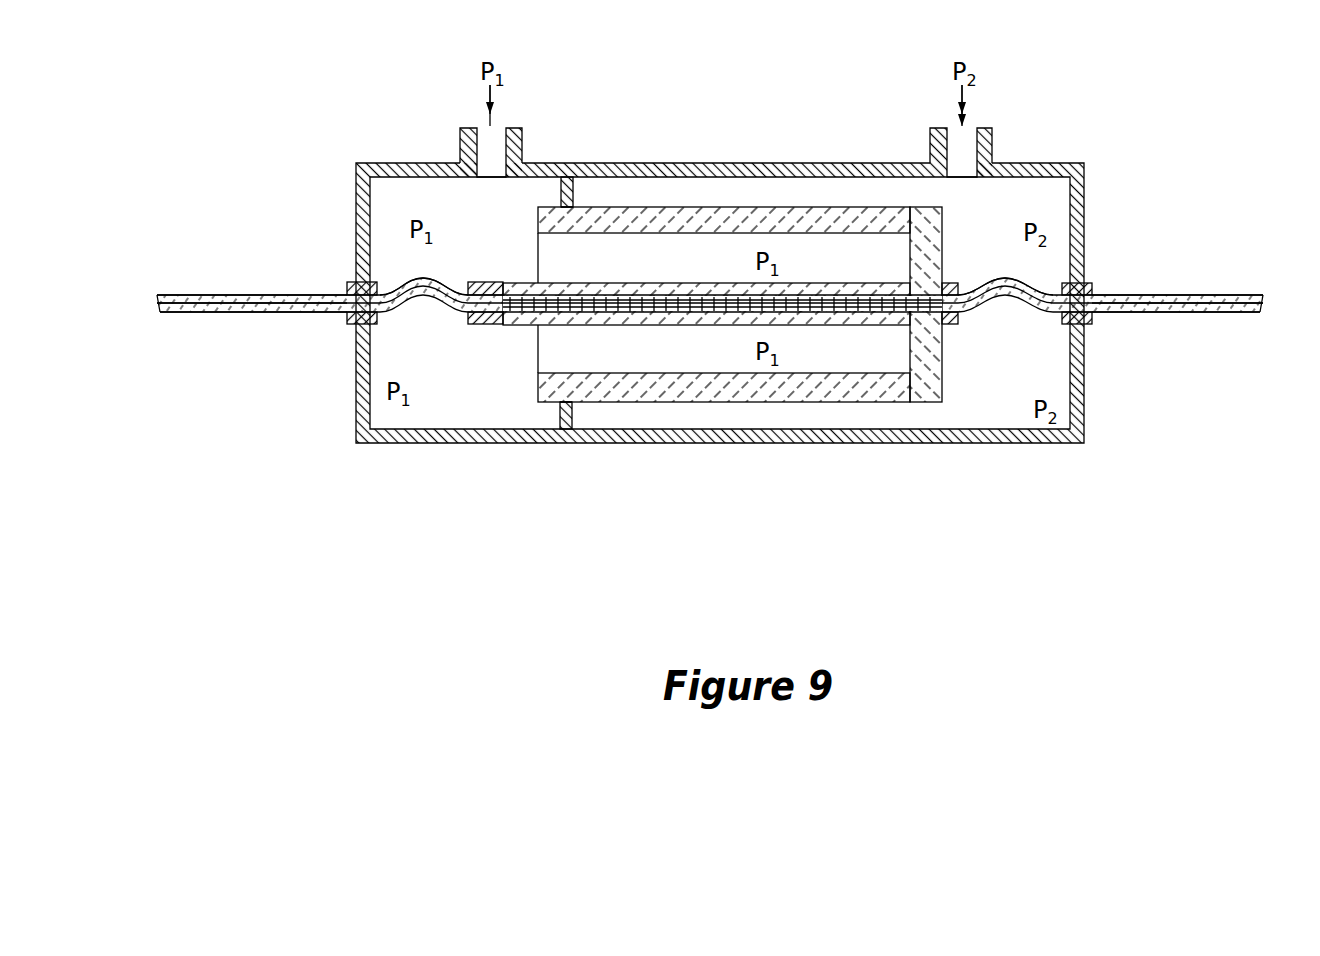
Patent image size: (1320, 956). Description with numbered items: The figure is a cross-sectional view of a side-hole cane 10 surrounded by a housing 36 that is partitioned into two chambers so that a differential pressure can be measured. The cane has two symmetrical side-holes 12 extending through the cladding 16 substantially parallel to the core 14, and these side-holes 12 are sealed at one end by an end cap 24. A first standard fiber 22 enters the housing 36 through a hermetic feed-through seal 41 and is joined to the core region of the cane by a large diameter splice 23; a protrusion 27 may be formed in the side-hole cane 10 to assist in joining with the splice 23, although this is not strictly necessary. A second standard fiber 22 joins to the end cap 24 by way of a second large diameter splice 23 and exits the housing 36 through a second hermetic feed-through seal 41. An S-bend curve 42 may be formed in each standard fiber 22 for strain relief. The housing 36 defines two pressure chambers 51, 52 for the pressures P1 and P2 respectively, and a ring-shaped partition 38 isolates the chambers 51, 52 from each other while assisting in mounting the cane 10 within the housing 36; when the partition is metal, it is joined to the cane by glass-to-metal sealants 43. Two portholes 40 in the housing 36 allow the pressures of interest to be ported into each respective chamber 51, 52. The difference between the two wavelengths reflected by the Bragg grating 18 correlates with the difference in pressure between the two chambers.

The side-hole cane 10 is at (703, 309).
The side-holes 12 is at (836, 262).
The core 14 is at (710, 261).
The cladding 16 is at (803, 289).
The Bragg grating 18 is at (716, 294).
The standard fibers 22 is at (224, 328).
The large diameter splices 23 is at (487, 288).
The end cap 24 is at (923, 393).
The protrusion 27 is at (518, 283).
The housing 36 is at (703, 307).
The ring-shaped partition 38 is at (581, 203).
The portholes 40 is at (490, 168).
The hermetic feed-through seal 41 is at (354, 282).
The S-bend curve 42 is at (423, 313).
The glass-to-metal sealants 43 is at (574, 186).
The first pressure chamber 51 is at (388, 172).
The second pressure chamber 52 is at (980, 393).